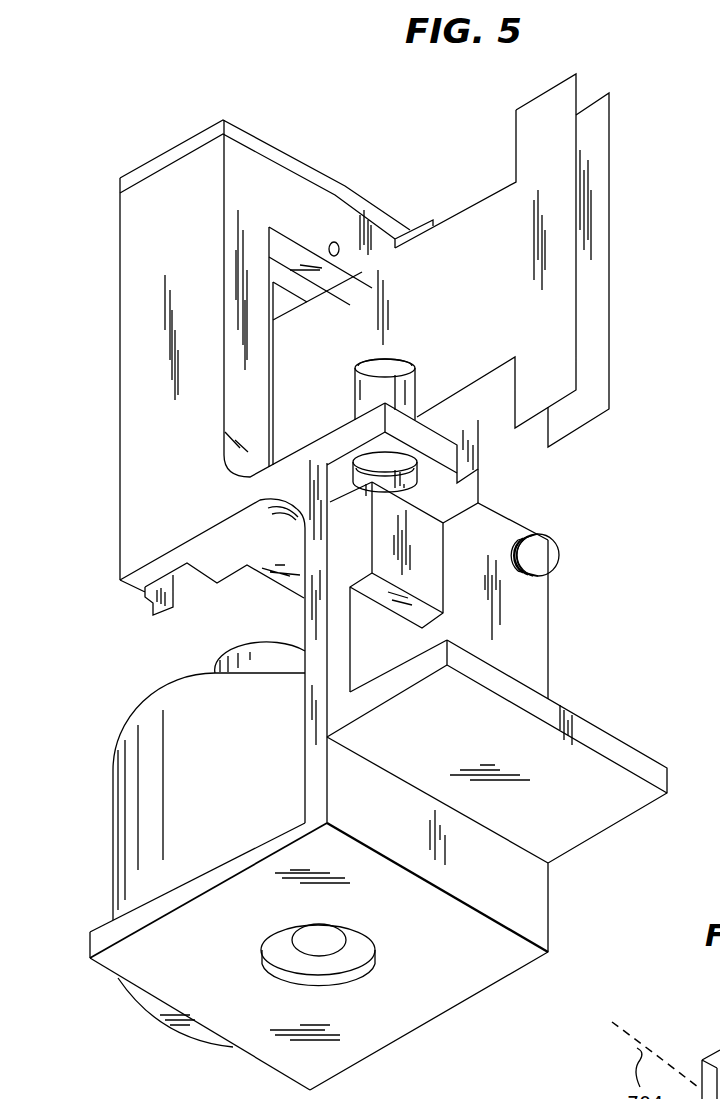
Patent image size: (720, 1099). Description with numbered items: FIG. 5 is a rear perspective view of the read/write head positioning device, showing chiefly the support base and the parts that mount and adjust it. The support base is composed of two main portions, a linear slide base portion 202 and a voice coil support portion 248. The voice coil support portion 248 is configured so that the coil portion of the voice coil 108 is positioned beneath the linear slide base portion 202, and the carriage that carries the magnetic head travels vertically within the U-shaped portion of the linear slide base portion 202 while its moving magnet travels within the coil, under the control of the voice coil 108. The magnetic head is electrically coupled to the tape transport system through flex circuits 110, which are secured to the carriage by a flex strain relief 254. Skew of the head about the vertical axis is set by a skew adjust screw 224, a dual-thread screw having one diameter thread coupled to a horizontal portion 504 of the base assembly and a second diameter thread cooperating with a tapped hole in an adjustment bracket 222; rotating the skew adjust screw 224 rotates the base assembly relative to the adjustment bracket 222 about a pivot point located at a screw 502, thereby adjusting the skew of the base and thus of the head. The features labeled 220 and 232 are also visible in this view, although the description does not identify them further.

The voice coil 108 is at (95, 781).
The flex circuits 110 is at (600, 252).
The linear slide base portion 202 is at (90, 384).
The U-shaped channel bracket 220 is at (238, 132).
The adjustment bracket 222 is at (640, 768).
The skew adjust screw 224 is at (409, 380).
The slot 232 is at (296, 295).
The voice coil support portion 248 is at (582, 893).
The flex strain relief 254 is at (470, 453).
The screw 502 is at (545, 553).
The horizontal portion 504 is at (345, 442).